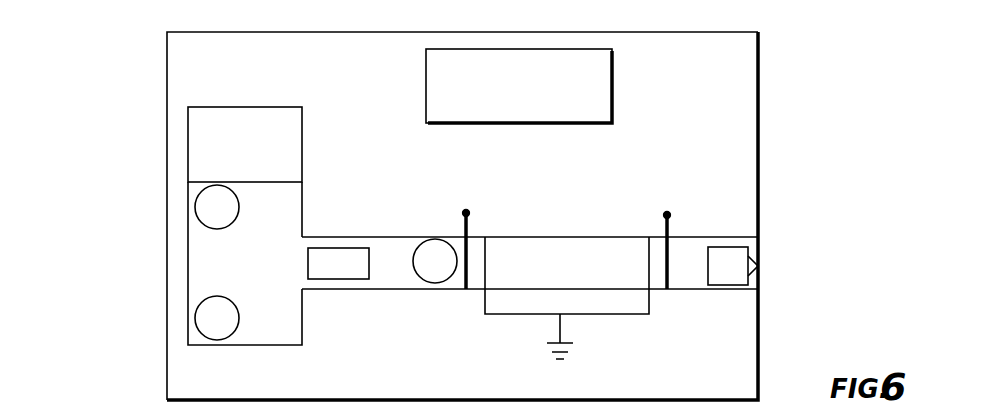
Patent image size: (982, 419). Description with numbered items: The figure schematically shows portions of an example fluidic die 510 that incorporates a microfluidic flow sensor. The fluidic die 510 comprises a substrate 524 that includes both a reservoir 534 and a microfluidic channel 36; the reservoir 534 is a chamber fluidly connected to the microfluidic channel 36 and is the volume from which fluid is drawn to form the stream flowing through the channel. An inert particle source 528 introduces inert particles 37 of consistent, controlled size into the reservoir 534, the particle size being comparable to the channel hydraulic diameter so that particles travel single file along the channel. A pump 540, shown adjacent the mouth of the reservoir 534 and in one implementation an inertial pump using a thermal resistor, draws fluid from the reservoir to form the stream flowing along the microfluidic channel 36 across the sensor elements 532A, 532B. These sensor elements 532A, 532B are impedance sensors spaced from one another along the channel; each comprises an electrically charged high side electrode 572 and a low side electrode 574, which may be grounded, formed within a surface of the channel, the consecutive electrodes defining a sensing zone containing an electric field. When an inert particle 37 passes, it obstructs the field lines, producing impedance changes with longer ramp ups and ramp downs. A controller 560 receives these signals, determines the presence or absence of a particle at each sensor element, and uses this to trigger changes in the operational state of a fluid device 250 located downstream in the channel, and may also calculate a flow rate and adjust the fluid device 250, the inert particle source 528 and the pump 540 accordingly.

The fluidic die 510 is at (99, 124).
The substrate 524 is at (758, 117).
The inert particle source 528 is at (235, 107).
The reservoir 534 is at (262, 345).
The inert particle 37 is at (214, 229).
The microfluidic channel 36 is at (688, 290).
The pump 540 is at (328, 248).
The controller 560 is at (505, 66).
The high side electrode 572 is at (462, 246).
The sensor element 532A is at (447, 194).
The sensor element 532B is at (661, 187).
The low side electrode 574 is at (650, 257).
The fluid device 250 is at (727, 247).